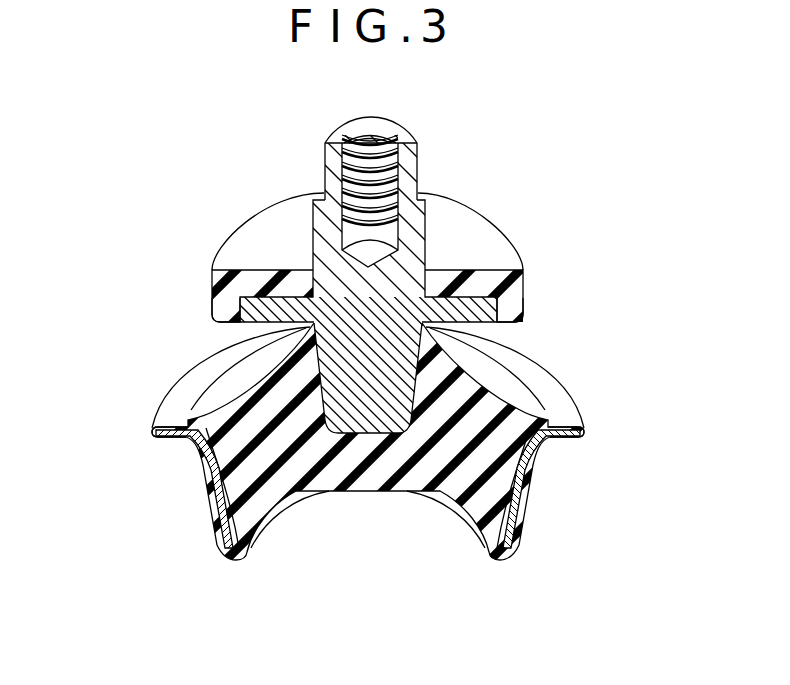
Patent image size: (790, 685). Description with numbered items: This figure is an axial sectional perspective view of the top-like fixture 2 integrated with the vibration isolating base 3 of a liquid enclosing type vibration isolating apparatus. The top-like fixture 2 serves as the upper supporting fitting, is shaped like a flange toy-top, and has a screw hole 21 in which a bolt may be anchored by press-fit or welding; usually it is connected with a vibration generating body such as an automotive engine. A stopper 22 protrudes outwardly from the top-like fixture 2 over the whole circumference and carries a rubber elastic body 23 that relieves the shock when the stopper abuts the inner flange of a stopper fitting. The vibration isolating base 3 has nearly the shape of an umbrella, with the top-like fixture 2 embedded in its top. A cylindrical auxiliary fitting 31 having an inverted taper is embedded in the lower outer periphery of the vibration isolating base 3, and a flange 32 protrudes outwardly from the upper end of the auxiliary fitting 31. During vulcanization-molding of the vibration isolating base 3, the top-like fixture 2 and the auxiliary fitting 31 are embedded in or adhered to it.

The top-like fixture 2 is at (500, 211).
The screw hole 21 is at (392, 137).
The stopper 22 is at (216, 308).
The rubber elastic body 23 is at (214, 282).
The vibration isolating base 3 is at (565, 369).
The auxiliary fitting 31 is at (515, 512).
The flange 32 is at (584, 432).